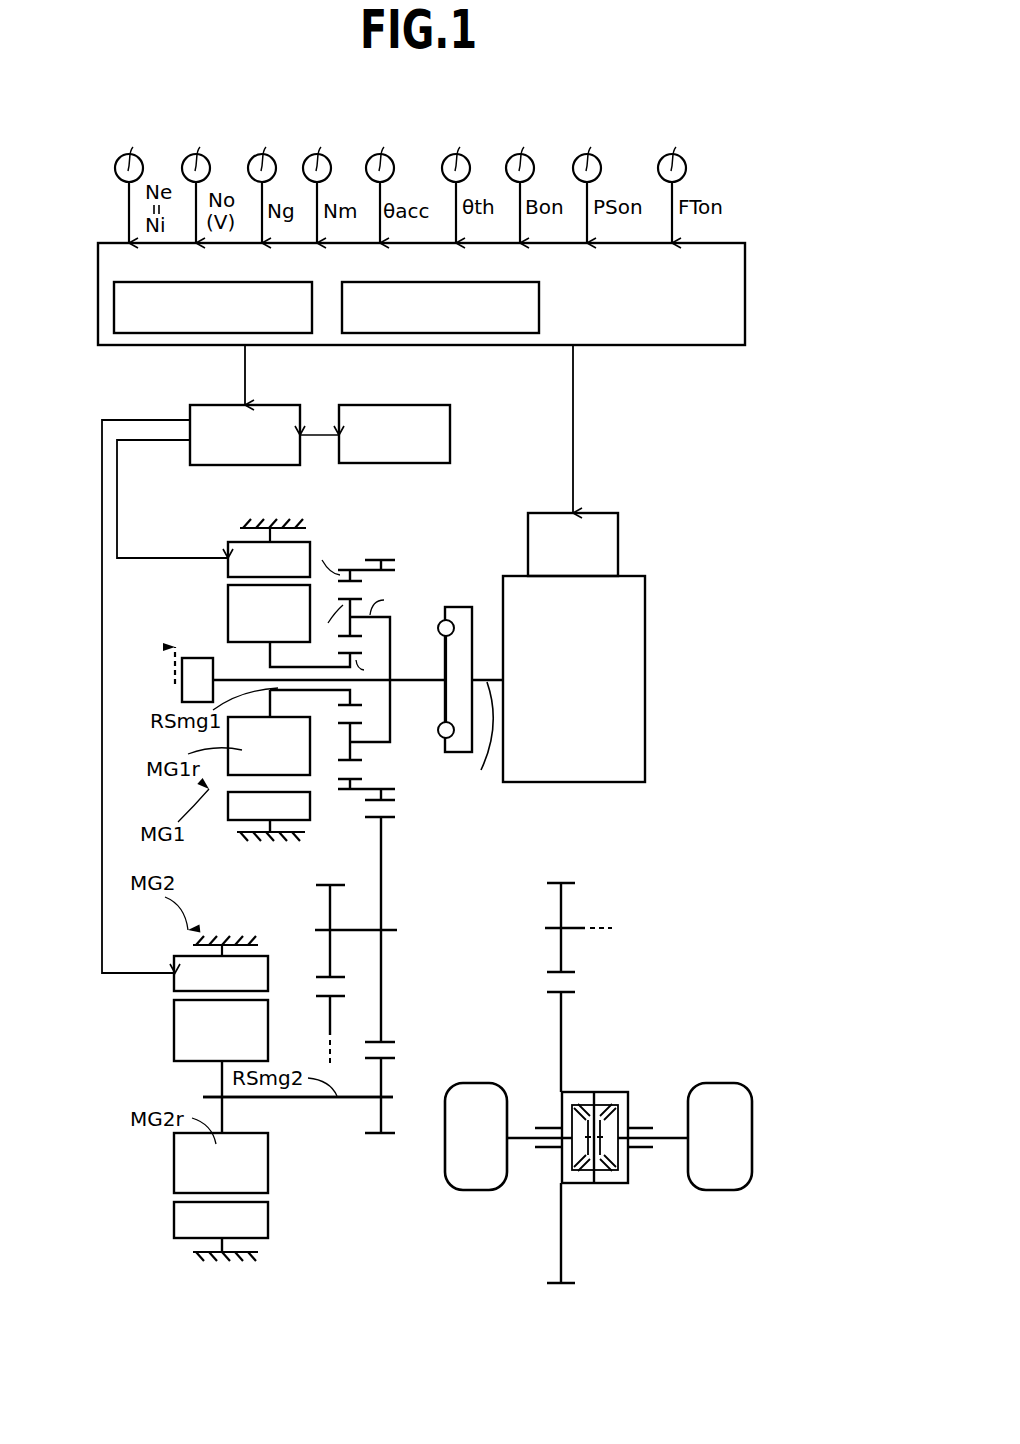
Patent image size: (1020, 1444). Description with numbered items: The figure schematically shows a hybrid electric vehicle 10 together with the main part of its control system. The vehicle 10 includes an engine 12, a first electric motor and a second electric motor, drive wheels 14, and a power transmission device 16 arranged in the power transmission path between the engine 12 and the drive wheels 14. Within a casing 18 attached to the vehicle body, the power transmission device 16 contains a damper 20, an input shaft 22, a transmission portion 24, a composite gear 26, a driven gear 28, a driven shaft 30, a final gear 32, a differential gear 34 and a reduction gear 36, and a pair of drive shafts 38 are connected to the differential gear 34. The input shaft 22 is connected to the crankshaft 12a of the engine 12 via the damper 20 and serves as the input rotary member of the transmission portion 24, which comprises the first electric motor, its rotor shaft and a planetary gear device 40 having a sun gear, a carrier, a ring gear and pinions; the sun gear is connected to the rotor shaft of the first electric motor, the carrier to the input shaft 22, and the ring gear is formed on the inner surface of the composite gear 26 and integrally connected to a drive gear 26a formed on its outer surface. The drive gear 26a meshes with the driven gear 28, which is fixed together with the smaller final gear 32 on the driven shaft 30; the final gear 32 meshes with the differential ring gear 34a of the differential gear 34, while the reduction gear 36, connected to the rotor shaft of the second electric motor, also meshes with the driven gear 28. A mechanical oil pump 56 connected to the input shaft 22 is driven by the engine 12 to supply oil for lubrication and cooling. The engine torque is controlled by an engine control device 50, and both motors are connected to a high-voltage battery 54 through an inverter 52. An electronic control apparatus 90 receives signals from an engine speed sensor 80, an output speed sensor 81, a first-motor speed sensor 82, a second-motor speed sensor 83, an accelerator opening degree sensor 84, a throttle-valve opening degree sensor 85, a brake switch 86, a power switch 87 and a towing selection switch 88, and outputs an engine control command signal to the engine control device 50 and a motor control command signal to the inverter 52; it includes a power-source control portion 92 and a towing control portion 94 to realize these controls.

The vehicle 10 is at (602, 106).
The engine 12 is at (613, 775).
The crankshaft 12a is at (485, 738).
The drive wheels 14 is at (478, 1185).
The power transmission device 16 is at (384, 1302).
The casing 18 is at (272, 522).
The damper 20 is at (455, 608).
The input shaft 22 is at (413, 678).
The transmission portion 24 is at (378, 528).
The composite gear 26 is at (362, 792).
The drive gear 26a is at (387, 798).
The driven gear 28 is at (385, 825).
The driven shaft 30 is at (327, 927).
The final gear 32 is at (327, 975).
The differential gear 34 is at (604, 1210).
The differential ring gear 34a is at (328, 996).
The reduction gear 36 is at (372, 1132).
The drive shafts 38 is at (518, 1141).
The planetary gear device 40 is at (350, 545).
The engine control device 50 is at (610, 520).
The inverter 52 is at (233, 408).
The high-voltage battery 54 is at (418, 410).
The mechanical oil pump 56 is at (198, 668).
The engine speed sensor 80 is at (129, 183).
The output speed sensor 81 is at (196, 183).
The MG1 speed sensor 82 is at (262, 183).
The MG2 speed sensor 83 is at (317, 183).
The accelerator opening degree sensor 84 is at (380, 183).
The throttle-valve opening degree sensor 85 is at (456, 183).
The brake switch 86 is at (520, 183).
The power switch 87 is at (587, 183).
The towing selection switch 88 is at (672, 183).
The electronic control apparatus 90 is at (670, 341).
The power-source control portion 92 is at (263, 293).
The towing control portion 94 is at (490, 293).